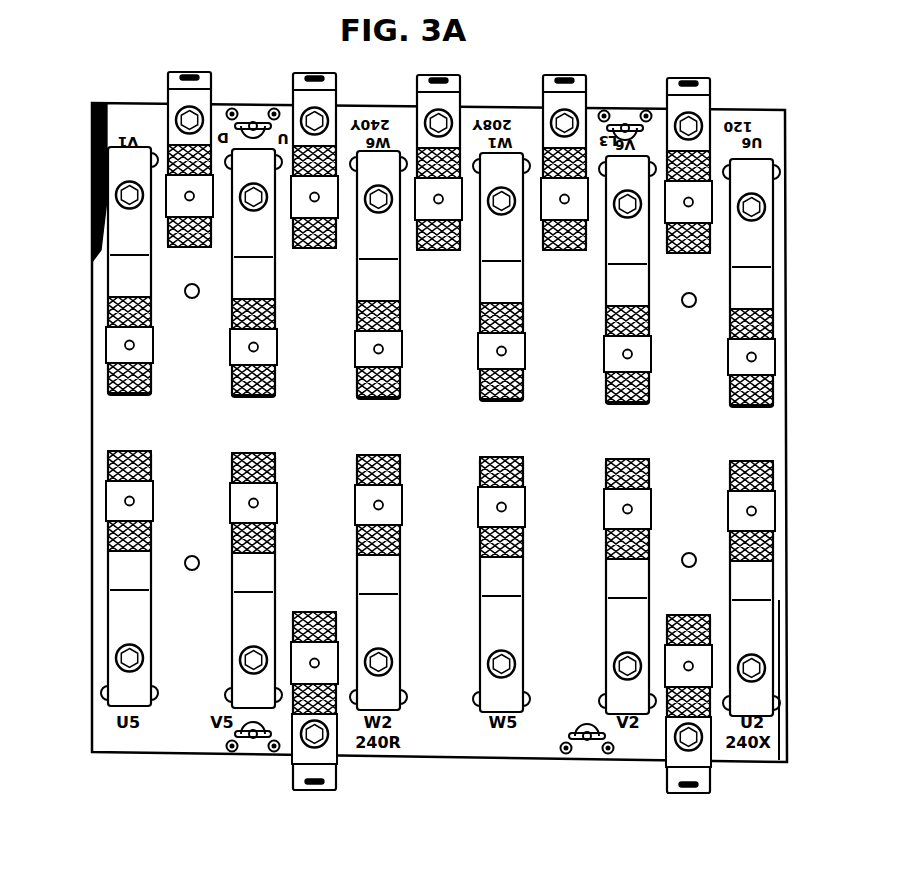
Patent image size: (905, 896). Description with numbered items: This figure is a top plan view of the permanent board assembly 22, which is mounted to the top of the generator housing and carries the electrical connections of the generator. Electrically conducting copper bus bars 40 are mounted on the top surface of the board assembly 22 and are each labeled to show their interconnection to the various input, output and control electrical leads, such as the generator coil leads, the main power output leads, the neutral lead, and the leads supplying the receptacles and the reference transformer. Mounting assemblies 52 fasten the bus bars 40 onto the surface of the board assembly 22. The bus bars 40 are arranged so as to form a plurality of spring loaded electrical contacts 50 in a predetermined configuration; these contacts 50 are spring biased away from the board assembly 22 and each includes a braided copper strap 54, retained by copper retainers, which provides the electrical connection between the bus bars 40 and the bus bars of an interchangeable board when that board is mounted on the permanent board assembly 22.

The permanent board assembly 22 is at (810, 245).
The bus bars 40 is at (760, 598).
The spring loaded electrical contacts 50 is at (104, 495).
The mounting assemblies 52 is at (122, 190).
The braided copper strap 54 is at (110, 388).